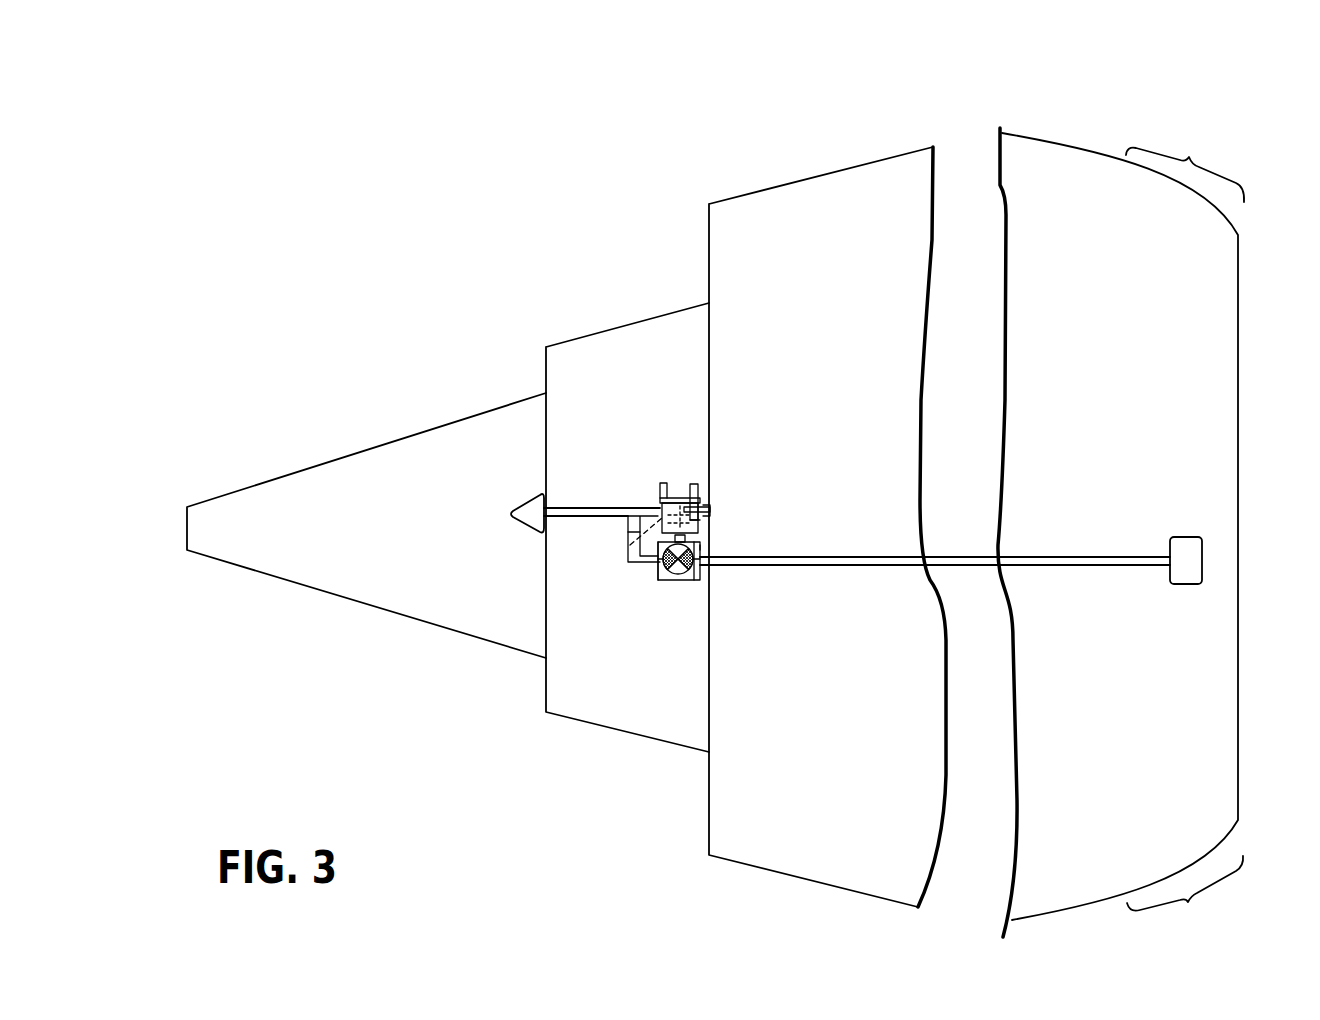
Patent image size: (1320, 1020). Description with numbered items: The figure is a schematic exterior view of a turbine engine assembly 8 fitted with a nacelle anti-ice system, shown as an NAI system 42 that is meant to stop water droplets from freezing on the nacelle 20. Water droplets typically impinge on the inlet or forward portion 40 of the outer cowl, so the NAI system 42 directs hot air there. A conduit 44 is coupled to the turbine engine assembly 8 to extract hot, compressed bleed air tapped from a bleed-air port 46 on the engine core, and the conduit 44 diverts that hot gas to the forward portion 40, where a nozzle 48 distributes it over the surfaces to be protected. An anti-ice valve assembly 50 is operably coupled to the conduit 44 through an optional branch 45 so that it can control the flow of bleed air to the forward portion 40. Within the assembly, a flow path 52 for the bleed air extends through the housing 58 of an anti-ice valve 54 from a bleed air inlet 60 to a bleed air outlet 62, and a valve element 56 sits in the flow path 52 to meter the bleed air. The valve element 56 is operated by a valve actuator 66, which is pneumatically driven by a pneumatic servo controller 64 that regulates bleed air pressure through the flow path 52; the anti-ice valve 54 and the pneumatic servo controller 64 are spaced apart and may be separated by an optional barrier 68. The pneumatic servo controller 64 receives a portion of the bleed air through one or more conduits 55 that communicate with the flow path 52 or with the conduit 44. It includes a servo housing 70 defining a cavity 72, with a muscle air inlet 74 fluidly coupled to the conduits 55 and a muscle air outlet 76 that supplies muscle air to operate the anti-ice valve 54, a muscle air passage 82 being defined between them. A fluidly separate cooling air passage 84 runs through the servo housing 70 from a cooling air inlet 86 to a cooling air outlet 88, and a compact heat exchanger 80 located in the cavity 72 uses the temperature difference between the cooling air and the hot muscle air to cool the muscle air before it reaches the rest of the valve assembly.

The turbine engine assembly 8 is at (424, 225).
The nacelle 20 is at (1027, 131).
The forward portion 40 is at (1185, 533).
The NAI system 42 is at (664, 488).
The conduit 44 is at (584, 507).
The branch 45 is at (657, 557).
The bleed-air port 46 is at (520, 497).
The nozzle 48 is at (1196, 565).
The anti-ice valve assembly 50 is at (725, 545).
The flow path 52 is at (660, 578).
The anti-ice valve 54 is at (670, 590).
The conduits 55 is at (645, 507).
The valve element 56 is at (678, 580).
The housing 58 is at (702, 570).
The bleed air inlet 60 is at (658, 566).
The bleed air outlet 62 is at (700, 563).
The pneumatic servo controller 64 is at (653, 468).
The valve actuator 66 is at (705, 550).
The barrier 68 is at (657, 558).
The servo housing 70 is at (703, 493).
The cavity 72 is at (708, 500).
The muscle air inlet 74 is at (627, 532).
The muscle air outlet 76 is at (705, 540).
The heat exchanger 80 is at (692, 497).
The muscle air passage 82 is at (630, 545).
The cooling air passage 84 is at (675, 493).
The cooling air inlet 86 is at (663, 493).
The cooling air outlet 88 is at (712, 525).